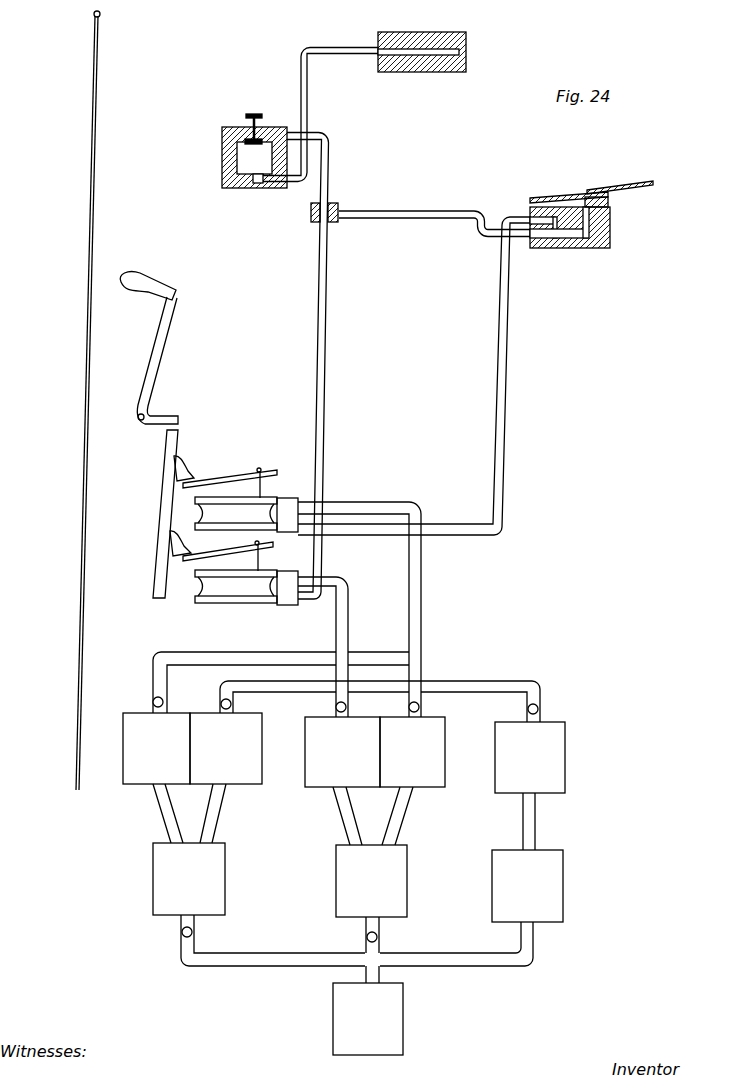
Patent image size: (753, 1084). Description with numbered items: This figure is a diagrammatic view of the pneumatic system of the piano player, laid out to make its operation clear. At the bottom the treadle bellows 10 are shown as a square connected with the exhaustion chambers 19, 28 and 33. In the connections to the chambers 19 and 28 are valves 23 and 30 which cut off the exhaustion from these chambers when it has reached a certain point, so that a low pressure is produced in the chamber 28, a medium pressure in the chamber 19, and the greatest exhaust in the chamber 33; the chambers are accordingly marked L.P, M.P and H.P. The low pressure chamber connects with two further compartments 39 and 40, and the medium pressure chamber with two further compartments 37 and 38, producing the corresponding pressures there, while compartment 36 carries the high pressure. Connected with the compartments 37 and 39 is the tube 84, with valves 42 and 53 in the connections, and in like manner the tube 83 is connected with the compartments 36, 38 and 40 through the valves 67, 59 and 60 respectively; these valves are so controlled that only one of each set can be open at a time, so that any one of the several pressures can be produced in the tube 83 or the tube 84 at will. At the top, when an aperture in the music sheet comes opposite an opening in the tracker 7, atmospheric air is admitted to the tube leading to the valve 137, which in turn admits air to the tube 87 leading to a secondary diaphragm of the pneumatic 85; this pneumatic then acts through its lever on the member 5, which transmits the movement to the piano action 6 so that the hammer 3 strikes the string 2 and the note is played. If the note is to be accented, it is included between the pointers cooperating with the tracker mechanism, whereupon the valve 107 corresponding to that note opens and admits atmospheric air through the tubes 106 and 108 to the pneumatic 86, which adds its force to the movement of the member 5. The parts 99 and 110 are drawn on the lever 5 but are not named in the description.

The strings 2 is at (90, 219).
The hammers 3 is at (133, 270).
The members 5 is at (165, 463).
The piano action 6 is at (160, 414).
The tracker 7 is at (445, 63).
The treadle bellows 10 is at (390, 1019).
The medium pressure exhaustion chamber 19 is at (393, 899).
The valve 23 is at (366, 938).
The low pressure exhaustion chamber 28 is at (215, 898).
The valve 30 is at (182, 933).
The high pressure exhaustion chamber 33 is at (553, 914).
The high pressure compartment 36 is at (568, 774).
The medium pressure compartment 37 is at (425, 775).
The medium pressure compartment 38 is at (329, 772).
The low pressure compartment 39 is at (140, 770).
The low pressure compartment 40 is at (236, 773).
The valve 42 is at (419, 709).
The valve 53 is at (153, 701).
The valve 59 is at (336, 707).
The valve 60 is at (221, 703).
The valve 67 is at (540, 709).
The tube 83 is at (337, 618).
The tube 84 is at (416, 612).
The pneumatic 85 is at (221, 598).
The pneumatic 86 is at (266, 496).
The tube 87 is at (328, 342).
The cam 99 is at (168, 548).
The tube 106 is at (417, 212).
The valve 107 is at (600, 232).
The tube 108 is at (506, 386).
The cam 110 is at (190, 466).
The valve 137 is at (224, 151).